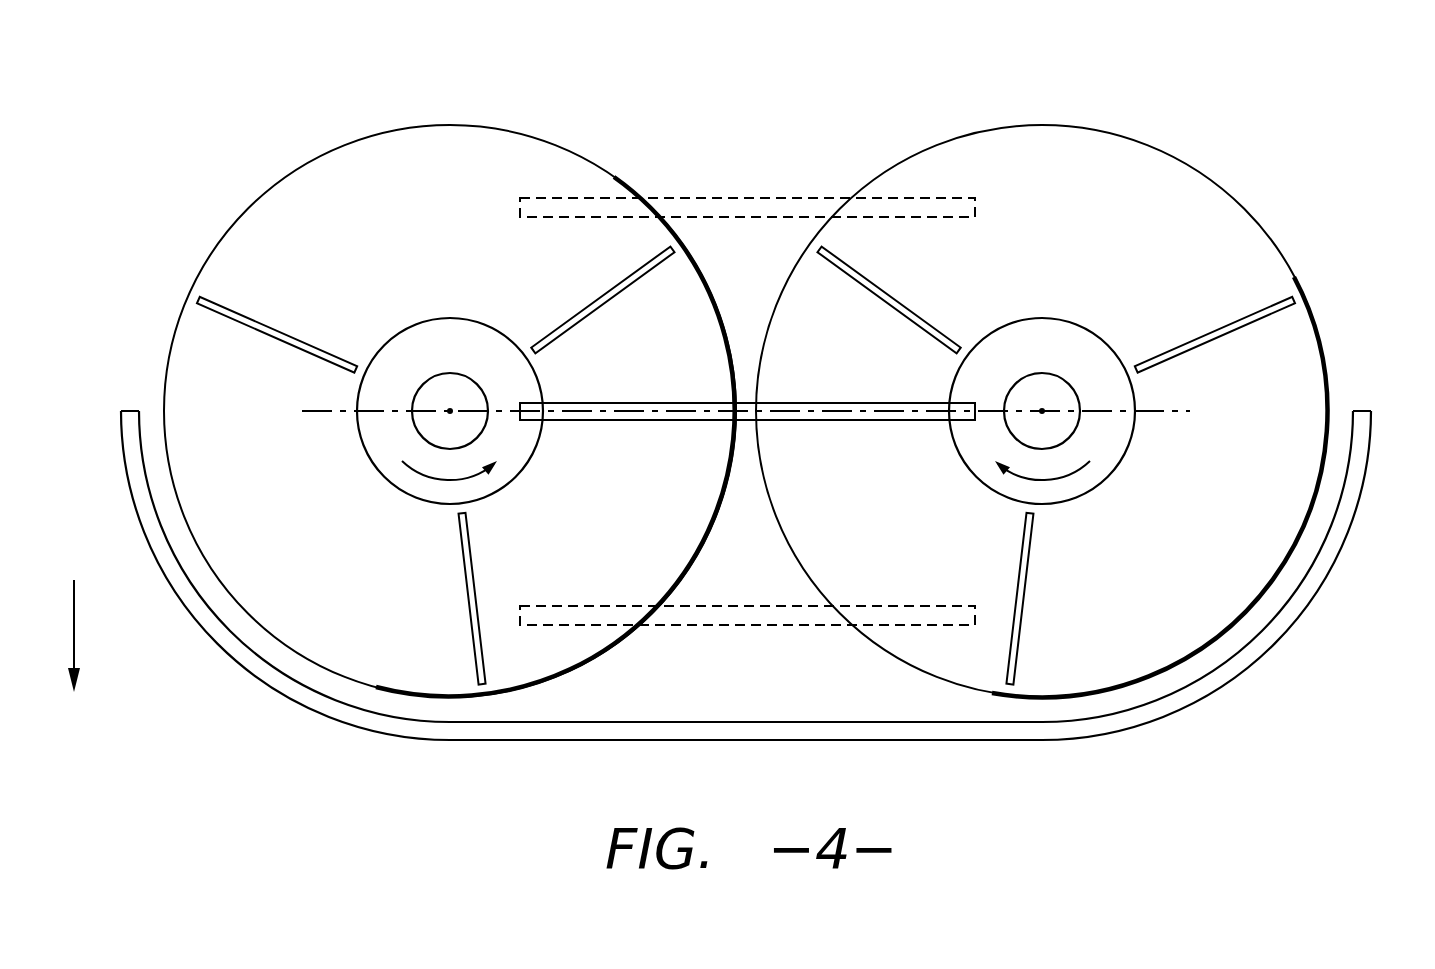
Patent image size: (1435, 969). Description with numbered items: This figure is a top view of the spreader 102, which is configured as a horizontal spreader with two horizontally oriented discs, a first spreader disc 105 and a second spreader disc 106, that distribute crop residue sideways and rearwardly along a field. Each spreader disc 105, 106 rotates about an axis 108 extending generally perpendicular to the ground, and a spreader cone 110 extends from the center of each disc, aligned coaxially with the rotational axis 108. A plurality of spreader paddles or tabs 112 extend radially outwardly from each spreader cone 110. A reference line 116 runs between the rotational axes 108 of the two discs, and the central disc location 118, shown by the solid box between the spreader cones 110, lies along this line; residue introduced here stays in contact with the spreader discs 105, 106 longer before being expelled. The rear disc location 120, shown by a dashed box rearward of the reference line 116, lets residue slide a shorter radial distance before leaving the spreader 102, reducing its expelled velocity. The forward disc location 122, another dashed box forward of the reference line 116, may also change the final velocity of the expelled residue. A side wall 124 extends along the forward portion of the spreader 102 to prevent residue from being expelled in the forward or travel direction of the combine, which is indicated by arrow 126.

The spreader 102 is at (1322, 139).
The first spreader disc 105 is at (323, 185).
The second spreader disc 106 is at (1168, 187).
The axis 108 is at (451, 405).
The spreader cone 110 is at (383, 431).
The spreader paddles 112 is at (229, 308).
The reference line 116 is at (330, 410).
The central disc location 118 is at (813, 422).
The rear disc location 120 is at (738, 197).
The forward disc location 122 is at (738, 625).
The side wall 124 is at (227, 653).
The arrow 126 is at (75, 620).